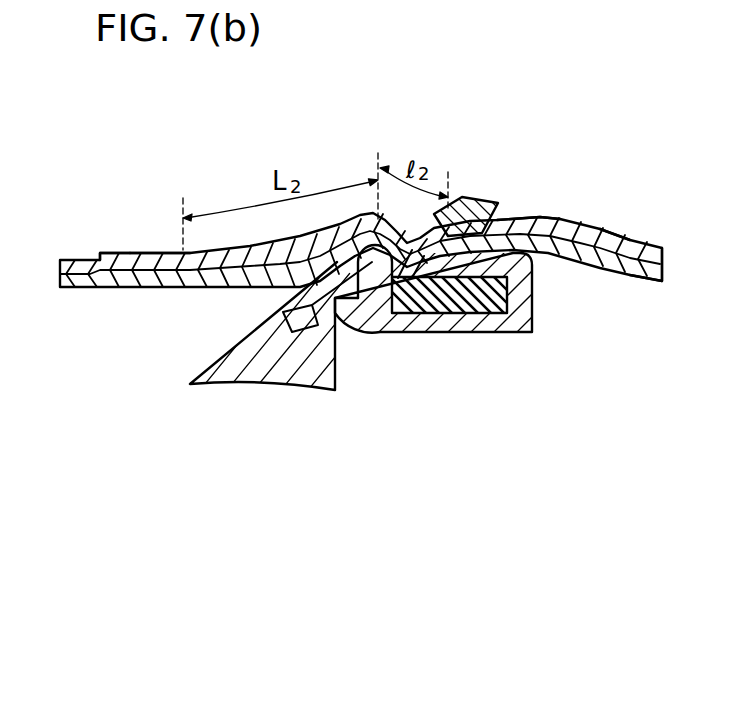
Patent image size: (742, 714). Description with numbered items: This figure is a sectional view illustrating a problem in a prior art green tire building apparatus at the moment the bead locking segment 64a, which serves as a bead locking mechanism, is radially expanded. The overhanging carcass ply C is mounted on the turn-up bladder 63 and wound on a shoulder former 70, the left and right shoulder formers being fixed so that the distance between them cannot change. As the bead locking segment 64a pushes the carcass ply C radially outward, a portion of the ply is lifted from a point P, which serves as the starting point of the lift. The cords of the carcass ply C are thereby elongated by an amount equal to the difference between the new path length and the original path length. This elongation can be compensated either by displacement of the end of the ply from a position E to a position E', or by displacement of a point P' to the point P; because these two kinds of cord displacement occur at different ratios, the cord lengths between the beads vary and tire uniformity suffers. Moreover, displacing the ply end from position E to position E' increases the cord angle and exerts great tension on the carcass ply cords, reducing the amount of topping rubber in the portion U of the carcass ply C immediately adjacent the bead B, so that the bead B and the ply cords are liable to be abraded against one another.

The point P' is at (110, 205).
The point P is at (182, 250).
The bead B is at (477, 198).
The carcass ply C is at (547, 218).
The position E' is at (630, 188).
The position E is at (661, 242).
The turn-up bladder 63 is at (632, 276).
The bead locking segment 64a is at (377, 318).
The portion U of the carcass ply U is at (467, 314).
The shoulder former 70 is at (263, 392).